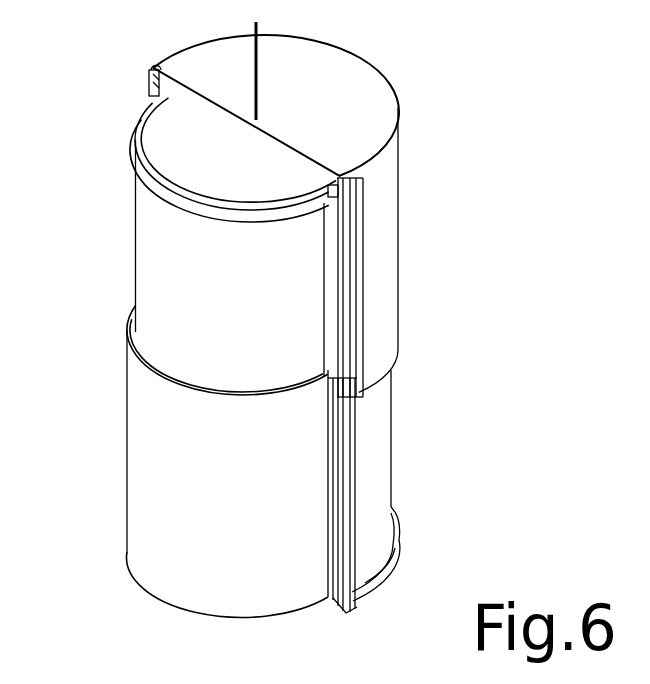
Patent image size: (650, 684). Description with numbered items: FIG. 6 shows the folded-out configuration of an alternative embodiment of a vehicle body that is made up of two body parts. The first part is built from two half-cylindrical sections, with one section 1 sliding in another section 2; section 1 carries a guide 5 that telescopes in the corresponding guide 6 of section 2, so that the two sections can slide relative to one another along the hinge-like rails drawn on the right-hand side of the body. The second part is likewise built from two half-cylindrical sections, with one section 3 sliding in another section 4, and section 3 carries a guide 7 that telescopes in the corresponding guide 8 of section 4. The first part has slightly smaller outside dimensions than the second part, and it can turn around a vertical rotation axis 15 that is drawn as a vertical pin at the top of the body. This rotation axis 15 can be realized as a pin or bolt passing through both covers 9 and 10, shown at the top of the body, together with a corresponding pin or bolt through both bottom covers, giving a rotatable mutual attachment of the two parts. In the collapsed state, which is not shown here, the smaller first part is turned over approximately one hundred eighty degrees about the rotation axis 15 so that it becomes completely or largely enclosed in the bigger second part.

The section 1 is at (182, 258).
The section 2 is at (187, 458).
The section 3 is at (387, 258).
The section 4 is at (380, 470).
The guide 5 is at (340, 302).
The guide 6 is at (330, 503).
The guide 7 is at (362, 323).
The guide 8 is at (352, 529).
The cover 9 is at (182, 148).
The cover 10 is at (333, 115).
The vertical rotation axis 15 is at (259, 54).